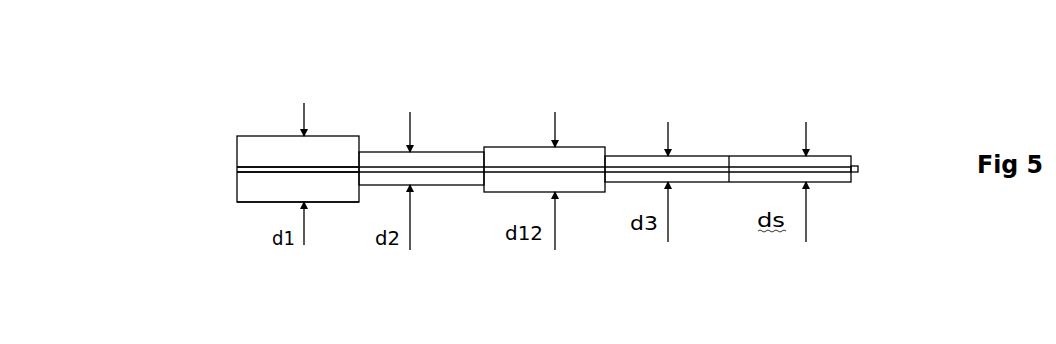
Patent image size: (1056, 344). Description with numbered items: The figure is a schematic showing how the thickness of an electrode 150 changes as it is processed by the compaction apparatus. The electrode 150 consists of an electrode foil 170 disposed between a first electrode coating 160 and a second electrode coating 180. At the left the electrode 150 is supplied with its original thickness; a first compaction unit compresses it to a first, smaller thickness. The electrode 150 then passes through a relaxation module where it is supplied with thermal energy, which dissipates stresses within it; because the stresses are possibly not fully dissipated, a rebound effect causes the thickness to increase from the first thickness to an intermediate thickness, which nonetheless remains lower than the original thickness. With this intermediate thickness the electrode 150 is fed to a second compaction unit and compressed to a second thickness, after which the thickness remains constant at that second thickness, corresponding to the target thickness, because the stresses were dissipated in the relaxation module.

The electrode 150 is at (619, 91).
The first electrode coating 160 is at (245, 143).
The electrode foil 170 is at (296, 170).
The second electrode coating 180 is at (259, 186).